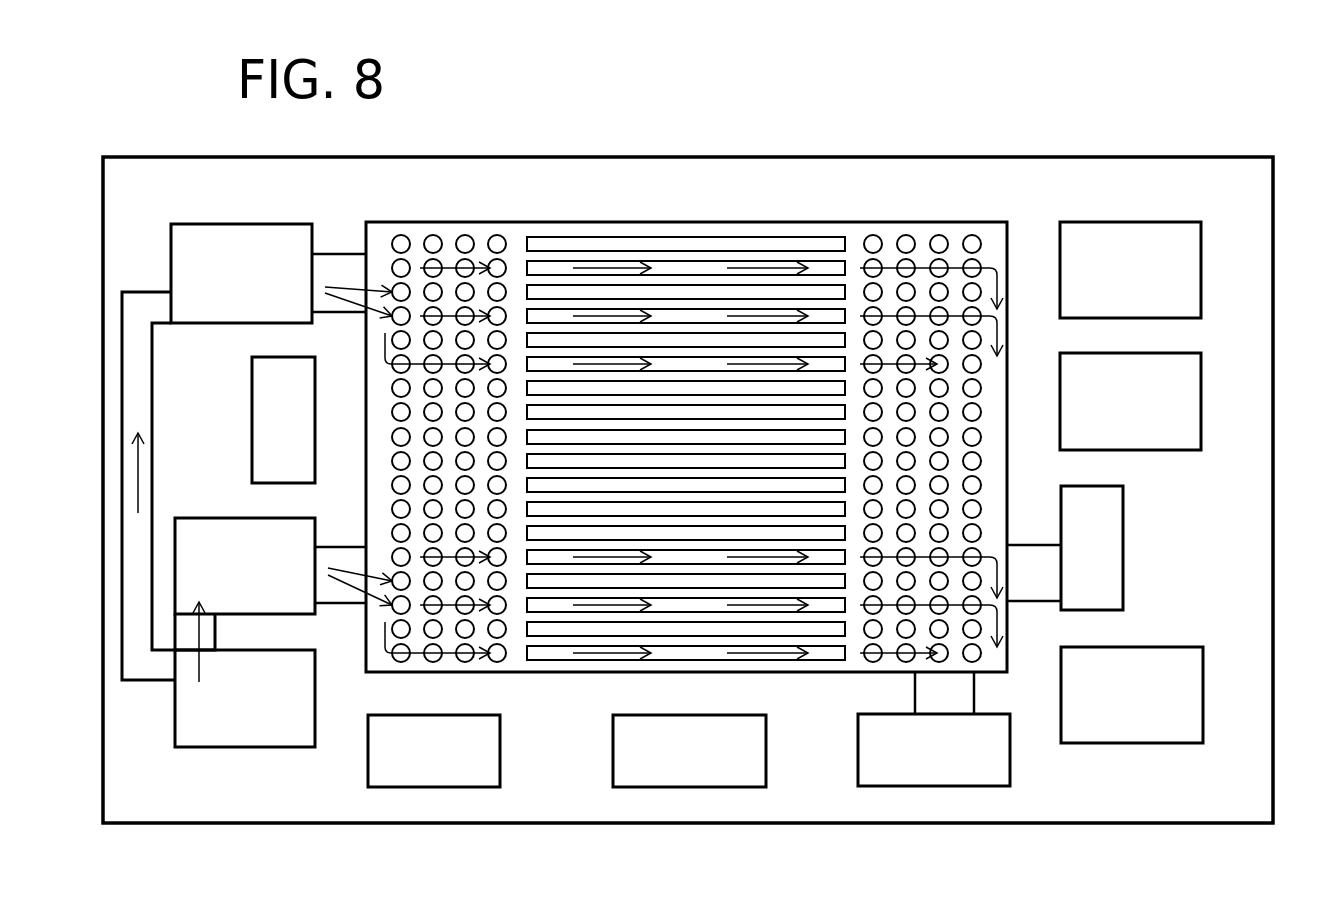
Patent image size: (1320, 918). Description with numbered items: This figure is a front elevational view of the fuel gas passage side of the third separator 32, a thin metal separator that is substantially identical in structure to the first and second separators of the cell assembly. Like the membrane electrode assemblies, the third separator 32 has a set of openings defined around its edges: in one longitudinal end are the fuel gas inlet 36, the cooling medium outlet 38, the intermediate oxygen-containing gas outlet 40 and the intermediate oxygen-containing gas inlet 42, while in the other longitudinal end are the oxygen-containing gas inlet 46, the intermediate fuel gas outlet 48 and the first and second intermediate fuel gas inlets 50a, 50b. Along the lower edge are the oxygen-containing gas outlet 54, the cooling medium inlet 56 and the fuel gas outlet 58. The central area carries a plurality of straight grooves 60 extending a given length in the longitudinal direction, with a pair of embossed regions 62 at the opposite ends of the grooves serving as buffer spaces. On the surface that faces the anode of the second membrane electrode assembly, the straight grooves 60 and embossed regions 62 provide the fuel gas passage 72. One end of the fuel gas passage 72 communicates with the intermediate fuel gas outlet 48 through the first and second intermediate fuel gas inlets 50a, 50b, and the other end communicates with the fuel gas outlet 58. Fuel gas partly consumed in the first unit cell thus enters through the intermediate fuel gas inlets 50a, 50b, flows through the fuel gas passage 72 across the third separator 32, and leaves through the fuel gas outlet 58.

The third separator 32 is at (1106, 122).
The fuel gas inlet 36 is at (1065, 548).
The cooling medium outlet 38 is at (1130, 270).
The intermediate oxygen-containing gas outlet 40 is at (1132, 695).
The intermediate oxygen-containing gas inlet 42 is at (1130, 401).
The oxygen-containing gas inlet 46 is at (283, 420).
The intermediate fuel gas outlet 48 is at (218, 519).
The first intermediate fuel gas inlet 50a is at (283, 566).
The second intermediate fuel gas inlet 50b is at (281, 273).
The oxygen-containing gas outlet 54 is at (434, 751).
The cooling medium inlet 56 is at (689, 751).
The fuel gas outlet 58 is at (934, 729).
The straight grooves 60 is at (655, 237).
The embossed regions 62 is at (433, 236).
The fuel gas passage 72 is at (790, 655).